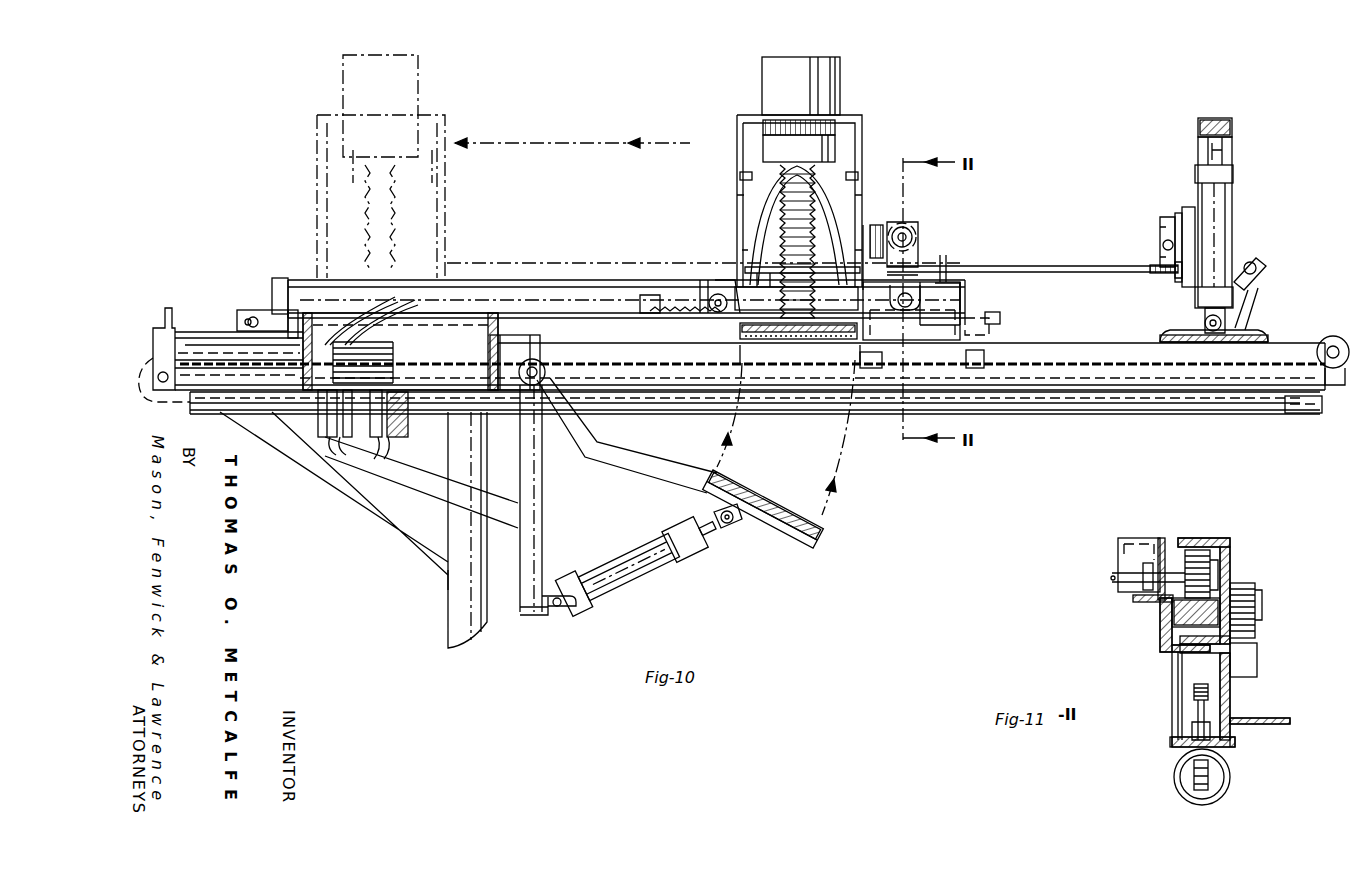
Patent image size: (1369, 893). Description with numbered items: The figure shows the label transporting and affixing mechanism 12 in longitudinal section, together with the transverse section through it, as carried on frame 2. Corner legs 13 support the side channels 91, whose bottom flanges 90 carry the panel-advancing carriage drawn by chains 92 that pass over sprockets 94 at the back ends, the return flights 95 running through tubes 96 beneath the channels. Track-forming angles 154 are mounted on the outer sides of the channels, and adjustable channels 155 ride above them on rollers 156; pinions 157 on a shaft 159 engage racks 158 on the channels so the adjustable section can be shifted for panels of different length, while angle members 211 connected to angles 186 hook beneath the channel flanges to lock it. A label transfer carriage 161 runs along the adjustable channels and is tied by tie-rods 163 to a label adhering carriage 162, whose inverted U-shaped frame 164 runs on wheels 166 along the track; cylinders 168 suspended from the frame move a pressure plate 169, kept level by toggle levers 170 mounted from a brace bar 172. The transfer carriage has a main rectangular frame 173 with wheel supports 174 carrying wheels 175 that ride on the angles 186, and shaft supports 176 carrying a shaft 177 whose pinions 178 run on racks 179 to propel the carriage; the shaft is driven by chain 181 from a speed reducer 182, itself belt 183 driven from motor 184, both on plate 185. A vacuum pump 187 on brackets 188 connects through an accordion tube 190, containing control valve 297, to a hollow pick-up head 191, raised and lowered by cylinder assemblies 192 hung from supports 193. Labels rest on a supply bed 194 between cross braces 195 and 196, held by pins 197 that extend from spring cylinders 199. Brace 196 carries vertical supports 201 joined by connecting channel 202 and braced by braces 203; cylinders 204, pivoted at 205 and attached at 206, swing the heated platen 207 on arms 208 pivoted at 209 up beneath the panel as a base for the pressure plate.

In FIG. 10, the frame 2 is at (446, 578).
In FIG. 10, the label transporting and affixing mechanism 12 is at (1096, 268).
In FIG. 10, the corner legs 13 is at (448, 615).
In FIG. 10, the bottom flanges 90 is at (1064, 389).
In FIG. 11, the bottom flanges 90 is at (1176, 743).
In FIG. 10, the side channels 91 is at (1285, 343).
In FIG. 11, the side channels 91 is at (1232, 688).
In FIG. 10, the chains 92 is at (675, 362).
In FIG. 11, the chains 92 is at (1192, 692).
In FIG. 10, the sprockets 94 is at (184, 362).
In FIG. 11, the sprockets 94 is at (1198, 713).
In FIG. 10, the return flights 95 is at (1316, 416).
In FIG. 11, the return flights 95 is at (1210, 774).
In FIG. 10, the tubes 96 is at (1210, 416).
In FIG. 11, the tubes 96 is at (1174, 782).
In FIG. 11, the track-forming angles 154 is at (1274, 719).
In FIG. 10, the adjustable channels 155 is at (558, 283).
In FIG. 11, the adjustable channels 155 is at (1208, 539).
In FIG. 10, the rollers 156 is at (282, 278).
In FIG. 10, the pinions 157 is at (245, 315).
In FIG. 11, the pinions 157 is at (1254, 602).
In FIG. 10, the racks 158 is at (222, 350).
In FIG. 11, the racks 158 is at (1256, 660).
In FIG. 10, the shaft 159 is at (255, 310).
In FIG. 10, the label transfer carriage 161 is at (738, 236).
In FIG. 10, the label adhering carriage 162 is at (1234, 196).
In FIG. 10, the tie-rods 163 is at (1044, 268).
In FIG. 10, the inverted U-shaped frame 164 is at (1216, 116).
In FIG. 10, the wheels 166 is at (1100, 339).
In FIG. 10, the cylinders 168 is at (1232, 212).
In FIG. 10, the pressure plate 169 is at (1236, 322).
In FIG. 10, the toggle levers 170 is at (1254, 274).
In FIG. 10, the brace bar 172 is at (1178, 210).
In FIG. 10, the main rectangular frame 173 is at (726, 286).
In FIG. 10, the wheel supports 174 is at (696, 288).
In FIG. 10, the wheels 175 is at (706, 301).
In FIG. 10, the shaft supports 176 is at (855, 366).
In FIG. 11, the shaft supports 176 is at (1162, 539).
In FIG. 10, the shaft 177 is at (960, 303).
In FIG. 11, the shaft 177 is at (1118, 571).
In FIG. 10, the pinions 178 is at (943, 301).
In FIG. 11, the pinions 178 is at (1210, 556).
In FIG. 10, the racks 179 is at (640, 292).
In FIG. 11, the racks 179 is at (1212, 598).
In FIG. 10, the chain 181 is at (796, 298).
In FIG. 10, the speed reducer 182 is at (914, 237).
In FIG. 10, the belt 183 is at (910, 219).
In FIG. 10, the motor 184 is at (874, 222).
In FIG. 10, the plate 185 is at (945, 258).
In FIG. 10, the angles 186 is at (1000, 312).
In FIG. 11, the angles 186 is at (1140, 597).
In FIG. 10, the vacuum pump 187 is at (838, 68).
In FIG. 10, the brackets 188 is at (738, 122).
In FIG. 10, the accordion tube 190 is at (738, 178).
In FIG. 10, the hollow pick-up head 191 is at (738, 330).
In FIG. 10, the cylinder assemblies 192 is at (778, 215).
In FIG. 10, the supports 193 is at (764, 180).
In FIG. 10, the supply bed 194 is at (425, 396).
In FIG. 10, the cross brace 195 is at (304, 374).
In FIG. 10, the cross brace 196 is at (484, 378).
In FIG. 10, the pins 197 is at (395, 300).
In FIG. 10, the spring cylinders 199 is at (352, 455).
In FIG. 10, the vertical supports 201 is at (545, 484).
In FIG. 10, the connecting channel 202 is at (520, 618).
In FIG. 10, the braces 203 is at (444, 481).
In FIG. 10, the cylinders 204 is at (620, 558).
In FIG. 10, the pivotal connection 205 is at (560, 606).
In FIG. 10, the piston rod attachment 206 is at (734, 526).
In FIG. 10, the platen 207 is at (784, 486).
In FIG. 10, the arms 208 is at (669, 462).
In FIG. 10, the pivot 209 is at (577, 372).
In FIG. 10, the angle members 211 is at (984, 356).
In FIG. 11, the angle members 211 is at (1159, 637).
In FIG. 10, the control valve 297 is at (815, 155).